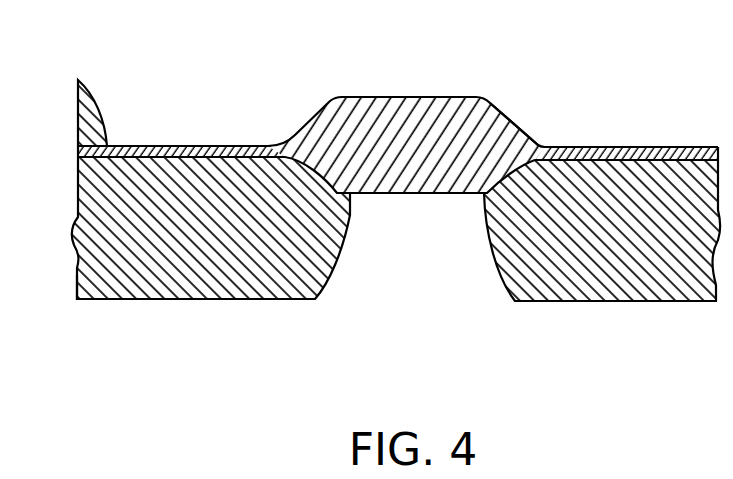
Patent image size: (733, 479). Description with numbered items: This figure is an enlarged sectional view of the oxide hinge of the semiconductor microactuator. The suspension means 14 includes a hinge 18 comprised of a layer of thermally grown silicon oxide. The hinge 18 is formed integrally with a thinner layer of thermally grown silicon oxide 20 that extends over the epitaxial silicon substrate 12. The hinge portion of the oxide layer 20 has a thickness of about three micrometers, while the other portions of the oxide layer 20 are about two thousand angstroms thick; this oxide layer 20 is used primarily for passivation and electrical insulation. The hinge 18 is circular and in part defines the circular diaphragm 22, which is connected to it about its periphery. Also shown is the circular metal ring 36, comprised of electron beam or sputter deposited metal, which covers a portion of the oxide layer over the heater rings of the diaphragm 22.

The epitaxial silicon substrate 12 is at (215, 300).
The suspension means 14 is at (375, 97).
The hinge 18 is at (510, 118).
The thermally grown silicon oxide layer 20 is at (193, 145).
The circular diaphragm 22 is at (93, 288).
The circular metal ring 36 is at (103, 108).